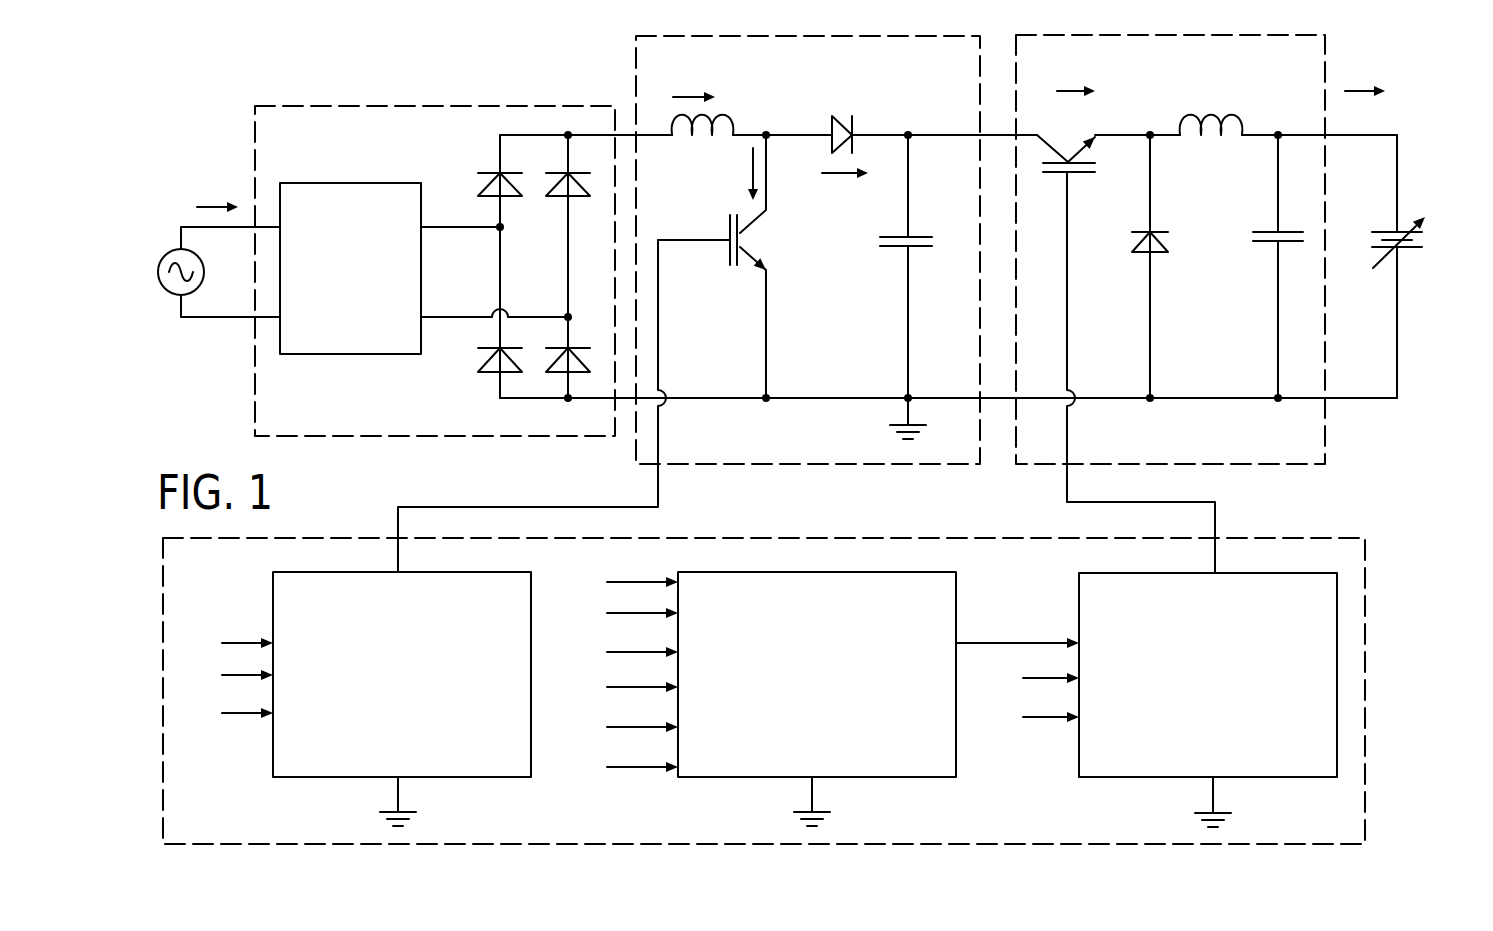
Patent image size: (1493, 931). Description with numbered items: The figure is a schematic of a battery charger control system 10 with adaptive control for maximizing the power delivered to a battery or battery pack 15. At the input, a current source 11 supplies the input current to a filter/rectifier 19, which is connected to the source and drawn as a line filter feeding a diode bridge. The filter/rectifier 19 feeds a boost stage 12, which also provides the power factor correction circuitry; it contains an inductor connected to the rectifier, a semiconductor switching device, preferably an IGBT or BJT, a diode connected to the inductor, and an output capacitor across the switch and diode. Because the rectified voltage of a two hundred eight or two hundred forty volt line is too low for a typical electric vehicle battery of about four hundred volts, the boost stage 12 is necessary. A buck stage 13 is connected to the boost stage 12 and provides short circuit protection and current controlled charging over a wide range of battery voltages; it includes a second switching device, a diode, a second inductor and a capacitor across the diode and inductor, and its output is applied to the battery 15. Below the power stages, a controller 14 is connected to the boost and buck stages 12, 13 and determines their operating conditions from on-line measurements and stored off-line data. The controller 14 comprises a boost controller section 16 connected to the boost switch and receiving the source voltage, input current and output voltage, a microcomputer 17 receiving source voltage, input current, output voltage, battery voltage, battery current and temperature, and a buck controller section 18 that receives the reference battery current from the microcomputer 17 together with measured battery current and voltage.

The battery charger control system 10 is at (1406, 86).
The current source 11 is at (169, 196).
The boost stage 12 is at (636, 63).
The buck stage 13 is at (1325, 54).
The controller 14 is at (1290, 537).
The battery 15 is at (1404, 252).
The boost controller section 16 is at (297, 778).
The microcomputer 17 is at (915, 778).
The buck controller section 18 is at (1111, 778).
The filter/rectifier 19 is at (452, 104).